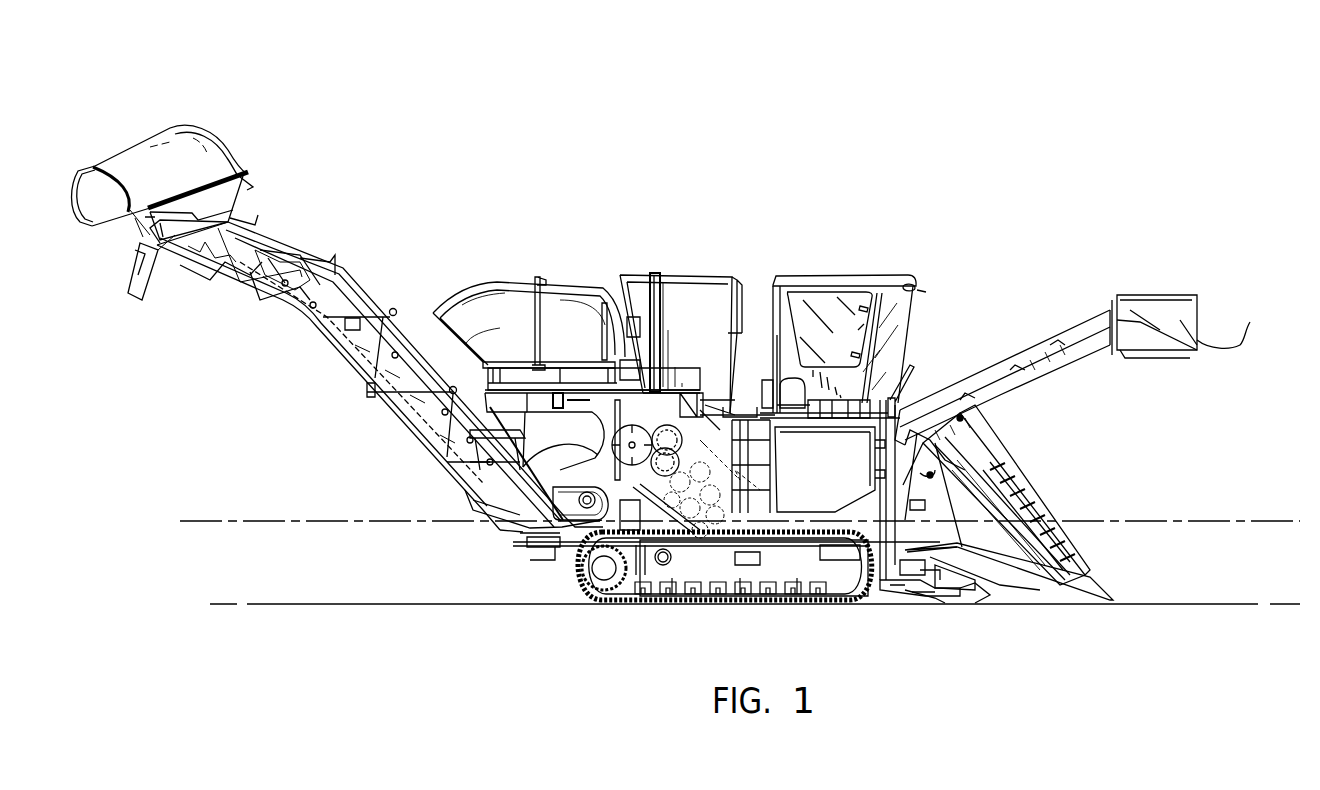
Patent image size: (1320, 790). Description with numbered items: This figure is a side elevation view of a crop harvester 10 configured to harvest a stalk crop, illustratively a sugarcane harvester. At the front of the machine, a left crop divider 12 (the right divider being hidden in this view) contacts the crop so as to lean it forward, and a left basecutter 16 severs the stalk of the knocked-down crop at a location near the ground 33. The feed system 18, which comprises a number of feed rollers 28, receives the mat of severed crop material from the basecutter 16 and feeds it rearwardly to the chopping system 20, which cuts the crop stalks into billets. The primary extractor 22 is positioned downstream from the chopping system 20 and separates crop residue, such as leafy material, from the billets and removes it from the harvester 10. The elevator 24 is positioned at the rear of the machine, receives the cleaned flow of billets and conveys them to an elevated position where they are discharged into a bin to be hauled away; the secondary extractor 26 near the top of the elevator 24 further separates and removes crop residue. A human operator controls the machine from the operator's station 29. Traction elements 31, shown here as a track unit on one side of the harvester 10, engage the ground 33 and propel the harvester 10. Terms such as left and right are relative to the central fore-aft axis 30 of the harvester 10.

The crop harvester 10 is at (824, 65).
The crop divider 12 is at (1043, 478).
The basecutter 16 is at (930, 592).
The feed system 18 is at (706, 445).
The chopping system 20 is at (633, 427).
The primary extractor 22 is at (558, 321).
The elevator 24 is at (355, 272).
The secondary extractor 26 is at (140, 160).
The feed rollers 28 is at (778, 488).
The operator's station 29 is at (892, 275).
The central fore-aft axis 30 is at (1195, 514).
The traction elements 31 is at (575, 588).
The ground 33 is at (340, 604).